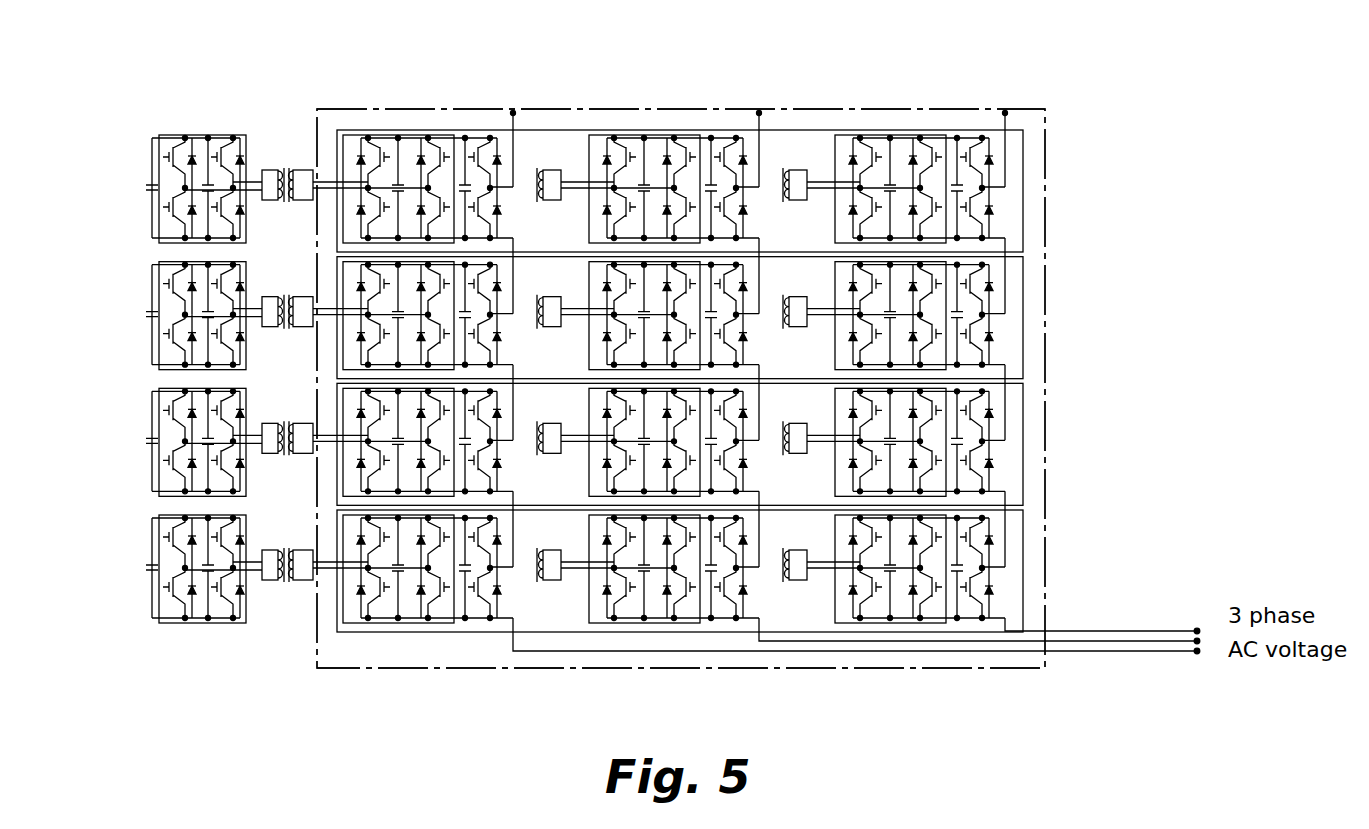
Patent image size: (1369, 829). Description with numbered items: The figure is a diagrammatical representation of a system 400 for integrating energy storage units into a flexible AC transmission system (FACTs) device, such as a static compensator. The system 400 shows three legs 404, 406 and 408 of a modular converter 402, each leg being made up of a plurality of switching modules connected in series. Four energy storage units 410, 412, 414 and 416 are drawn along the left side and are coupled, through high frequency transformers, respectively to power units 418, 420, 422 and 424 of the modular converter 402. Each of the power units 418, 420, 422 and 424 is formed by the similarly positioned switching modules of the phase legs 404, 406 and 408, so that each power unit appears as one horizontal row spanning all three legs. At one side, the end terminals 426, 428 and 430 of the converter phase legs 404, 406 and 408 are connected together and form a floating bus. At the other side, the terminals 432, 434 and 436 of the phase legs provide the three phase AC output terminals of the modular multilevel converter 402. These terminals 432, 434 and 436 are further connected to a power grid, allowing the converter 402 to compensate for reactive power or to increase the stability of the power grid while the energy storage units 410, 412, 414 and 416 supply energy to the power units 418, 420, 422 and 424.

The system 400 is at (104, 102).
The modular converter 402 is at (317, 109).
The first phase leg 404 is at (513, 147).
The second phase leg 406 is at (759, 147).
The third phase leg 408 is at (1006, 144).
The energy storage unit 410 is at (152, 190).
The energy storage unit 412 is at (152, 317).
The energy storage unit 414 is at (152, 443).
The energy storage unit 416 is at (152, 570).
The power unit 418 is at (727, 191).
The power unit 420 is at (1023, 314).
The power unit 422 is at (1023, 440).
The power unit 424 is at (1023, 567).
The one side end terminal 426 is at (513, 113).
The one side end terminal 428 is at (759, 113).
The one side end terminal 430 is at (1005, 113).
The other side terminal 432 is at (1197, 651).
The other side terminal 434 is at (1197, 642).
The other side terminal 436 is at (1197, 631).